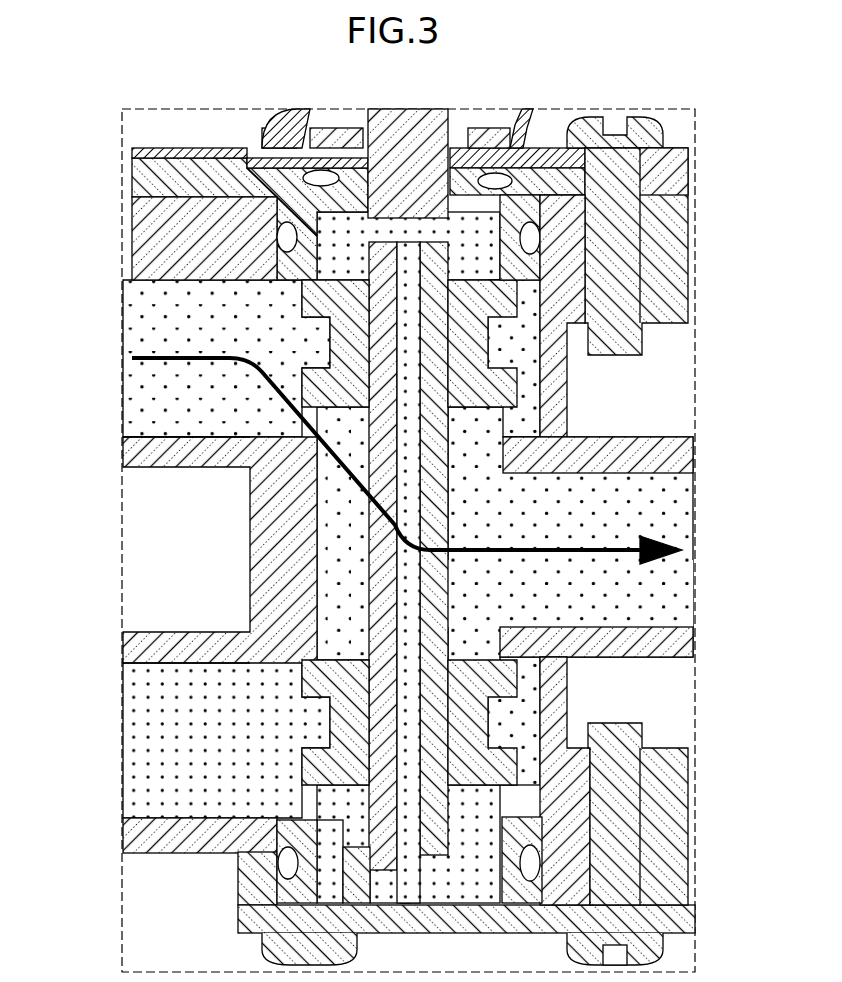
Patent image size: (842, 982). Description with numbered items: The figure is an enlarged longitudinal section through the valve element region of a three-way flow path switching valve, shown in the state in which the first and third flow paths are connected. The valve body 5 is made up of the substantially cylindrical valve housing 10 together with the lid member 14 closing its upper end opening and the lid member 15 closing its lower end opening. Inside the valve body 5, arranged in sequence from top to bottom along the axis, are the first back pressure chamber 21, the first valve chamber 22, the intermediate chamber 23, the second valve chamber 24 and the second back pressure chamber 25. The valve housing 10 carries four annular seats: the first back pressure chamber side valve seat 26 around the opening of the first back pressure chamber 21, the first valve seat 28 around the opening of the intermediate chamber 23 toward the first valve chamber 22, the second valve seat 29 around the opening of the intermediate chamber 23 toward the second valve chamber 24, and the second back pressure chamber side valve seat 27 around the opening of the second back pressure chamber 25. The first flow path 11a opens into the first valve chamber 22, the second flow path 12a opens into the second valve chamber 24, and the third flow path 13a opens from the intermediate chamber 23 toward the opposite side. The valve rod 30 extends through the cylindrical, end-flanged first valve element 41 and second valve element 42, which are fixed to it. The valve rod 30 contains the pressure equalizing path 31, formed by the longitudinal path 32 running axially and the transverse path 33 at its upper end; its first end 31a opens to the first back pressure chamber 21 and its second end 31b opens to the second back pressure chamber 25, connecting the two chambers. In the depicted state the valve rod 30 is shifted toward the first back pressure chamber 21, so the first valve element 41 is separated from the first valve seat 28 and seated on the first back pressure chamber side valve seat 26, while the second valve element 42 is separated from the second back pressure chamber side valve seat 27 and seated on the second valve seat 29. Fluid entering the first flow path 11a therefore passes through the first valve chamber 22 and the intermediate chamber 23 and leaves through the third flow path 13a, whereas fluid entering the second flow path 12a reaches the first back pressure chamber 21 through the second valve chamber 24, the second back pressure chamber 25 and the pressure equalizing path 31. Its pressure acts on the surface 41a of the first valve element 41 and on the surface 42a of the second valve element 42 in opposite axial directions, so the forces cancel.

The valve body 5 is at (157, 146).
The lid member 14 is at (265, 160).
The transverse path 33 is at (270, 230).
The first end 31a is at (288, 240).
The surface 41a is at (300, 284).
The first valve element 41 is at (303, 318).
The first flow path 11a is at (150, 436).
The valve housing 10 is at (255, 516).
The longitudinal path 32 is at (410, 556).
The intermediate chamber 23 is at (328, 603).
The second flow path 12a is at (155, 671).
The pressure equalizing path 31 is at (330, 710).
The second valve element 42 is at (303, 747).
The surface 42a is at (318, 788).
The second end 31b is at (280, 876).
The lid member 15 is at (238, 917).
The first back pressure chamber 21 is at (545, 233).
The first back pressure chamber side valve seat 26 is at (553, 283).
The first valve chamber 22 is at (527, 352).
The first valve seat 28 is at (507, 435).
The third flow path 13a is at (670, 478).
The valve rod 30 is at (452, 580).
The second valve seat 29 is at (570, 673).
The second valve chamber 24 is at (527, 780).
The second back pressure chamber side valve seat 27 is at (513, 817).
The second back pressure chamber 25 is at (500, 870).